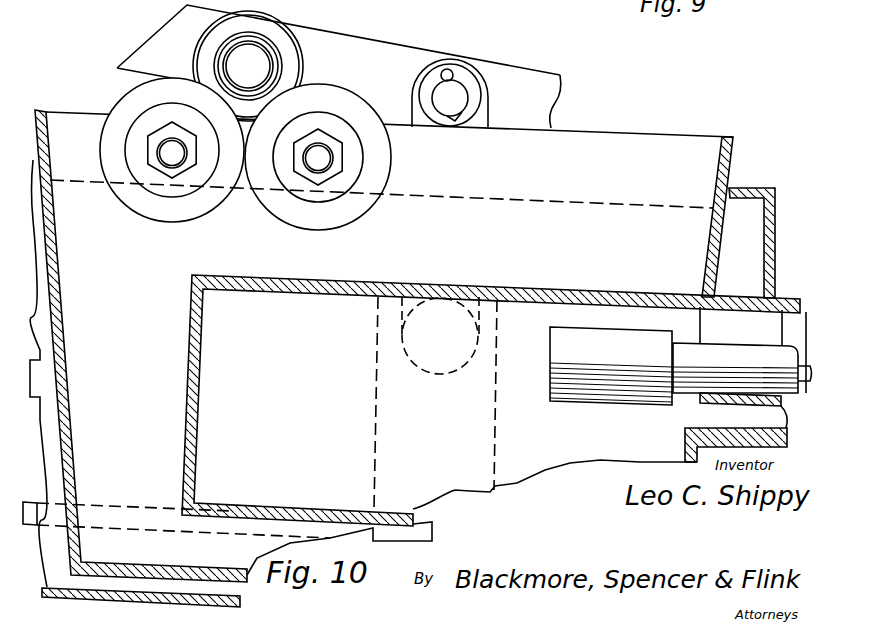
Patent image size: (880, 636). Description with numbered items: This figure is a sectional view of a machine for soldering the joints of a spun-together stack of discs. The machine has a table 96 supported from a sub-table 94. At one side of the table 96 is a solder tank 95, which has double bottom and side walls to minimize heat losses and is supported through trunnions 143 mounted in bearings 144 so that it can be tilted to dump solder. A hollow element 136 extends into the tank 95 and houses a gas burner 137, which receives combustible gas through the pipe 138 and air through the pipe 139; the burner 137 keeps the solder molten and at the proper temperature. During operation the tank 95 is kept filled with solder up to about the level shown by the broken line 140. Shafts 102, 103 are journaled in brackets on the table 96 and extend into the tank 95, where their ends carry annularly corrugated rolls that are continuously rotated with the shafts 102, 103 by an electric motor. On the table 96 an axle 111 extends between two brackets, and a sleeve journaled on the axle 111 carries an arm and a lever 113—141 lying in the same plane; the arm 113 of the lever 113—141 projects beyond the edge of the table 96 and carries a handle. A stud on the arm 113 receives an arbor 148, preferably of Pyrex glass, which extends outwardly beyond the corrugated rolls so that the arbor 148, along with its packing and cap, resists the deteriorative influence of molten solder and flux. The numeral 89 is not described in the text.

The part of adjacent figure 89 is at (500, 1).
The sub-table 94 is at (37, 505).
The solder tank 95 is at (733, 160).
The table 96 is at (37, 367).
The shaft 102 is at (332, 159).
The shaft 103 is at (167, 153).
The axle 111 is at (455, 88).
The arm of lever 113 is at (510, 80).
The hollow element 136 is at (192, 290).
The gas burner 137 is at (597, 333).
The pipe 138 is at (803, 362).
The pipe 139 is at (733, 350).
The broken line 140 is at (568, 200).
The lever 141 is at (180, 25).
The trunnion 143 is at (418, 303).
The bearing 144 is at (498, 310).
The arbor 148 is at (243, 57).